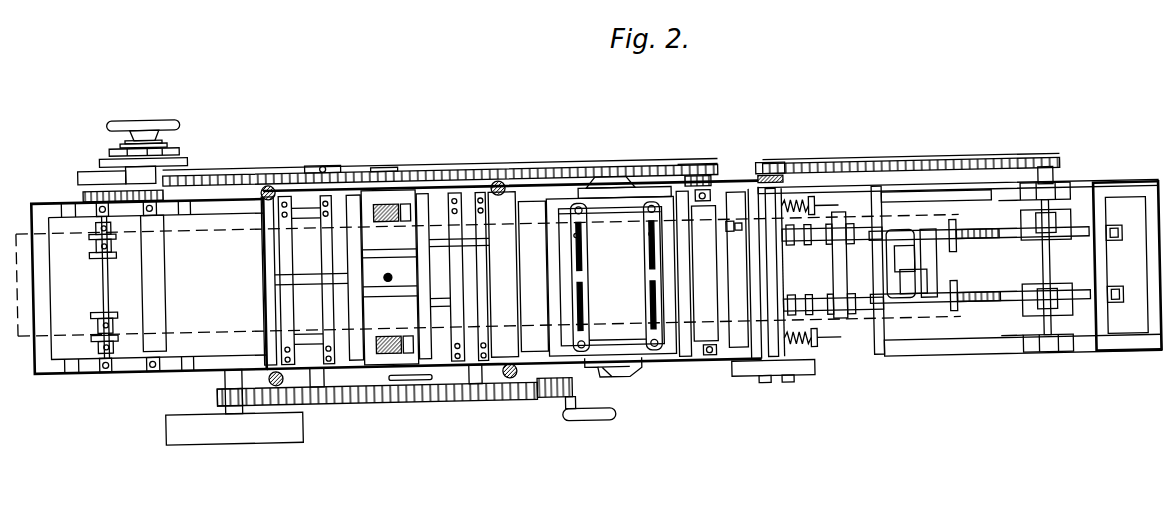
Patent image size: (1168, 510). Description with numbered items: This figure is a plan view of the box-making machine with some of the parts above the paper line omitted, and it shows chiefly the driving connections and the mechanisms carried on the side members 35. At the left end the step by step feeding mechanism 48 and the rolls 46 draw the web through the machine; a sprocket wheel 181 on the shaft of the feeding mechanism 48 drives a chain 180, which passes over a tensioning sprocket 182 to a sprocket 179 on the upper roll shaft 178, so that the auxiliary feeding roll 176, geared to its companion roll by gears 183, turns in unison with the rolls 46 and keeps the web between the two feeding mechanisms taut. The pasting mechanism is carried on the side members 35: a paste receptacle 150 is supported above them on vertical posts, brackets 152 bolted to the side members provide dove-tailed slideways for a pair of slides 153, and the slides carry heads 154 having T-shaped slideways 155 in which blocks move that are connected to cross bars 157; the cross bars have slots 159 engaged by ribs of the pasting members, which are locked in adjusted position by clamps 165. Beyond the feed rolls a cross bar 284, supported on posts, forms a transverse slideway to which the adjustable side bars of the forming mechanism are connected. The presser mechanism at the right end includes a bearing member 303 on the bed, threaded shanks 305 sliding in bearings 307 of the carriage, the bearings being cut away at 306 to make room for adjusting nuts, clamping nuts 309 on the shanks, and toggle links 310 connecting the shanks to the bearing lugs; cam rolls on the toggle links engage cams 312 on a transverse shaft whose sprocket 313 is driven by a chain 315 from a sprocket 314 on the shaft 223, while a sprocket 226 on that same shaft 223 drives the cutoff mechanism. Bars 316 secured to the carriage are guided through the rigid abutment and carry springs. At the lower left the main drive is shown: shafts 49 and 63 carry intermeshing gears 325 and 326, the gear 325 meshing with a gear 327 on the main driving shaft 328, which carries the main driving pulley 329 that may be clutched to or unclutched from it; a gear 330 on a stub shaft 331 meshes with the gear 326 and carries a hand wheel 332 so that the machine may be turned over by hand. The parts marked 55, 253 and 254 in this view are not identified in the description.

The side members 35 is at (690, 362).
The rolls 46 is at (166, 272).
The step by step feeding mechanism 48 is at (184, 147).
The shaft 49 is at (316, 399).
The carriage frame 55 is at (235, 204).
The shaft 63 is at (477, 367).
The paste receptacle 150 is at (611, 276).
The brackets 152 is at (610, 380).
The slides 153 is at (622, 373).
The heads 154 is at (645, 225).
The T-shaped slots or slideways 155 is at (612, 340).
The cross bars 157 is at (645, 273).
The slots 159 is at (645, 290).
The clamps 165 is at (650, 237).
The feeding roll 176 is at (713, 340).
The upper roll shaft 178 is at (716, 188).
The sprocket 179 is at (690, 168).
The chain 180 is at (600, 172).
The sprocket wheel 181 is at (163, 173).
The tensioning sprocket 182 is at (392, 160).
The gears 183 is at (703, 167).
The shaft 223 is at (782, 193).
The sprocket 226 is at (760, 166).
The foot 253 is at (766, 386).
The plate 254 is at (812, 380).
The cross bar 284 is at (885, 331).
The bearing member 303 is at (1106, 272).
The threaded shanks 305 is at (982, 247).
The cut-away portion 306 is at (924, 239).
The bearings 307 is at (908, 300).
The clamping nuts 309 is at (954, 292).
The toggle links 310 is at (1033, 242).
The cams 312 is at (1062, 262).
The sprocket 313 is at (1053, 165).
The sprocket 314 is at (783, 152).
The chain 315 is at (950, 165).
The bars 316 is at (830, 342).
The gear 325 is at (348, 402).
The gear 326 is at (417, 401).
The gear 327 is at (215, 388).
The main driving shaft 328 is at (233, 354).
The main driving pulley 329 is at (228, 427).
The gear 330 is at (565, 398).
The stub shaft 331 is at (553, 400).
The hand wheel 332 is at (615, 414).